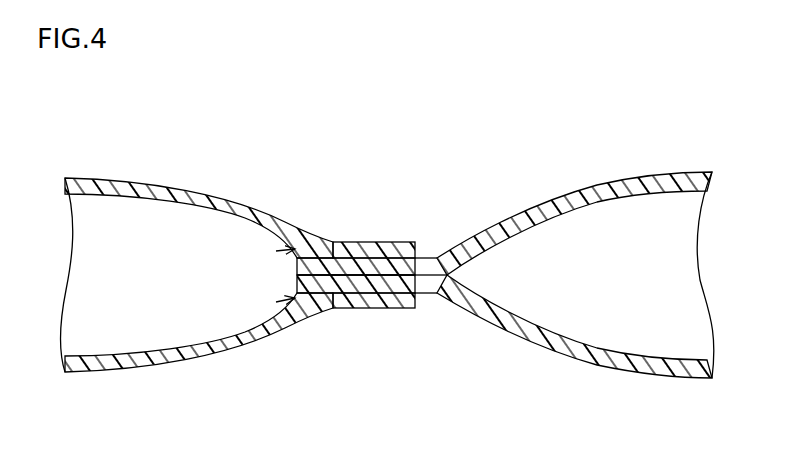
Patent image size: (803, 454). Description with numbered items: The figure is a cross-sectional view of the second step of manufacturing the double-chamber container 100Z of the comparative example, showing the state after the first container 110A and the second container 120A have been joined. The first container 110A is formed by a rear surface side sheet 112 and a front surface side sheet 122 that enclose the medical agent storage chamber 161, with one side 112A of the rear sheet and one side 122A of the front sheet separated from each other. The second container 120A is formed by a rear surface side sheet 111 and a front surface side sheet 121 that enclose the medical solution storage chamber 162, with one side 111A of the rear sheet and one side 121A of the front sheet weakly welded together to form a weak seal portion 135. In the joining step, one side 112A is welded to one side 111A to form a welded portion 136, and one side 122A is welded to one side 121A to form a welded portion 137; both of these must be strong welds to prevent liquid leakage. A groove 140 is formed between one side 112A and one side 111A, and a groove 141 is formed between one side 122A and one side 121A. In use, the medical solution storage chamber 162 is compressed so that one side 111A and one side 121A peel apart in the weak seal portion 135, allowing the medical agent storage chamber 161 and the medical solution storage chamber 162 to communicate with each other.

The double-chamber container 100Z is at (177, 125).
The first container 110A is at (237, 148).
The second container 120A is at (655, 148).
The rear surface side sheet 111 is at (608, 190).
The rear surface side sheet 112 is at (128, 195).
The front surface side sheet 121 is at (610, 362).
The front surface side sheet 122 is at (124, 360).
The medical agent storage chamber 161 is at (185, 277).
The medical solution storage chamber 162 is at (553, 277).
The groove 140 is at (268, 233).
The groove 141 is at (268, 317).
The weak seal portion 135 is at (375, 250).
The one side of rear surface side sheet 111A is at (338, 258).
The one side of rear surface side sheet 112A is at (402, 249).
The one side of front surface side sheet 121A is at (335, 300).
The one side of front surface side sheet 122A is at (400, 300).
The welded portion 136 is at (367, 262).
The welded portion 137 is at (372, 290).